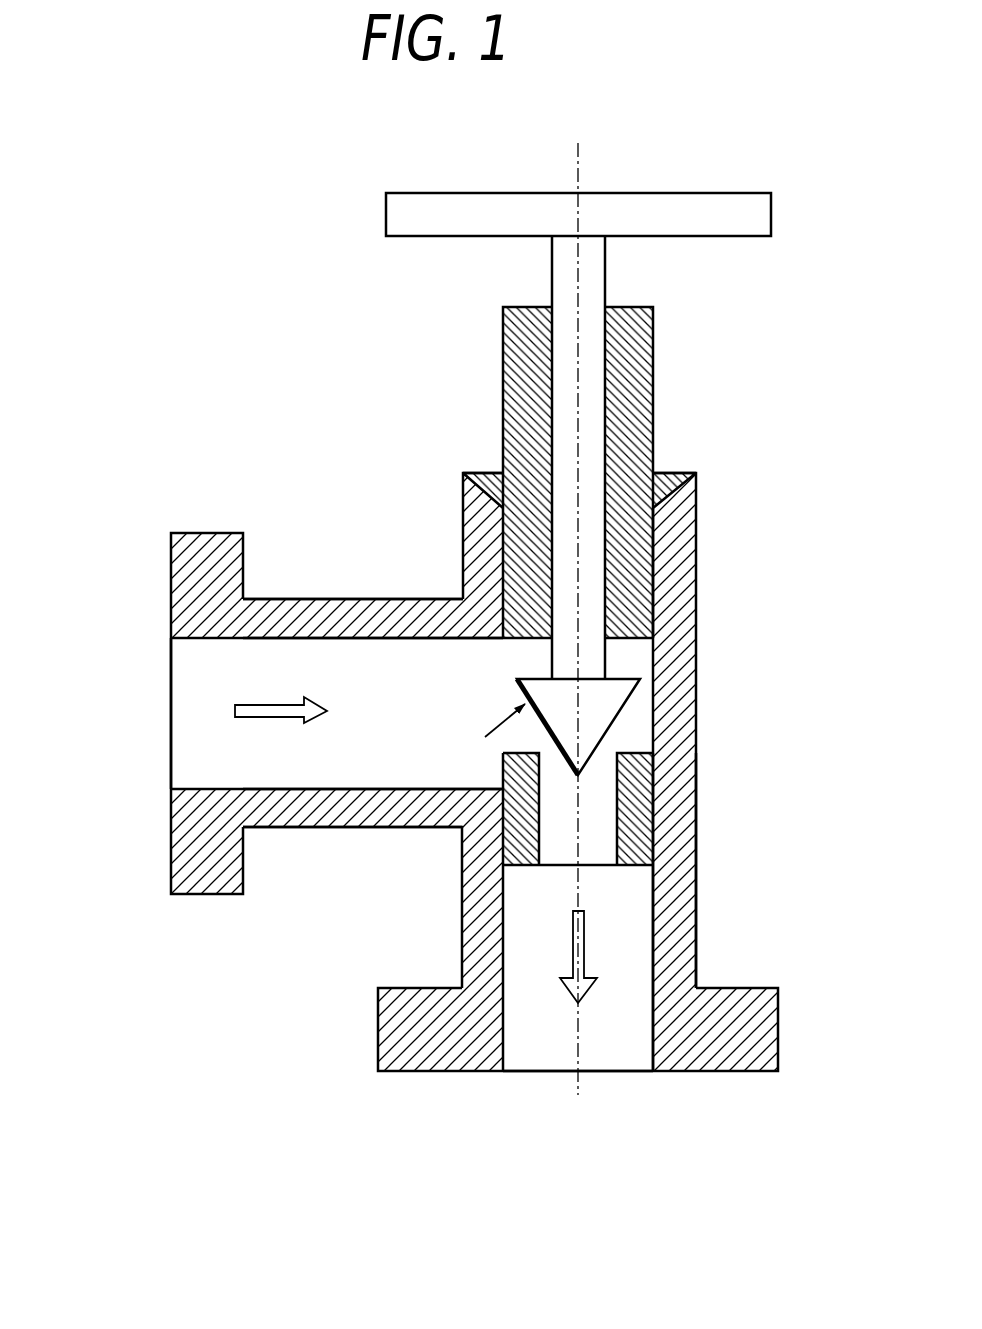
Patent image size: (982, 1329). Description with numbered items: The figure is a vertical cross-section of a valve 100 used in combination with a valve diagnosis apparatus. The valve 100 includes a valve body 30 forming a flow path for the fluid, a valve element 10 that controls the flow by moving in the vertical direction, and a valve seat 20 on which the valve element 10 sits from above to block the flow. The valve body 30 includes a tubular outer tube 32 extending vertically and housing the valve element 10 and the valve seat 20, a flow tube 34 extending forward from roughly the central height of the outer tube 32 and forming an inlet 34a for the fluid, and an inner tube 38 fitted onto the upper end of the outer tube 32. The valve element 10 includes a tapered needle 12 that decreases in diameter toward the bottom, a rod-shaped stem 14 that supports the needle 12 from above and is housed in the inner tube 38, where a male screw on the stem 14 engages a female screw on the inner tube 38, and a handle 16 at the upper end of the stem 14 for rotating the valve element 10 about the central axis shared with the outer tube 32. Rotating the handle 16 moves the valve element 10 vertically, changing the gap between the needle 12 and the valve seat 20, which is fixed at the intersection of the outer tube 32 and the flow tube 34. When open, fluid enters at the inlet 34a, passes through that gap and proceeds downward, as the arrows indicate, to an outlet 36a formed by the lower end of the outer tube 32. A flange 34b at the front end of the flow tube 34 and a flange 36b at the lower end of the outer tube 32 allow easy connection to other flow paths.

The valve 100 is at (182, 248).
The valve element 10 is at (617, 669).
The needle 12 is at (608, 705).
The stem 14 is at (590, 282).
The handle 16 is at (675, 198).
The valve seat 20 is at (627, 749).
The valve body 30 is at (704, 552).
The outer tube 32 is at (672, 805).
The flow tube 34 is at (335, 617).
The inlet 34a is at (203, 720).
The flange 34b is at (205, 548).
The outlet 36a is at (603, 1040).
The flange 36b is at (740, 1028).
The inner tube 38 is at (628, 387).